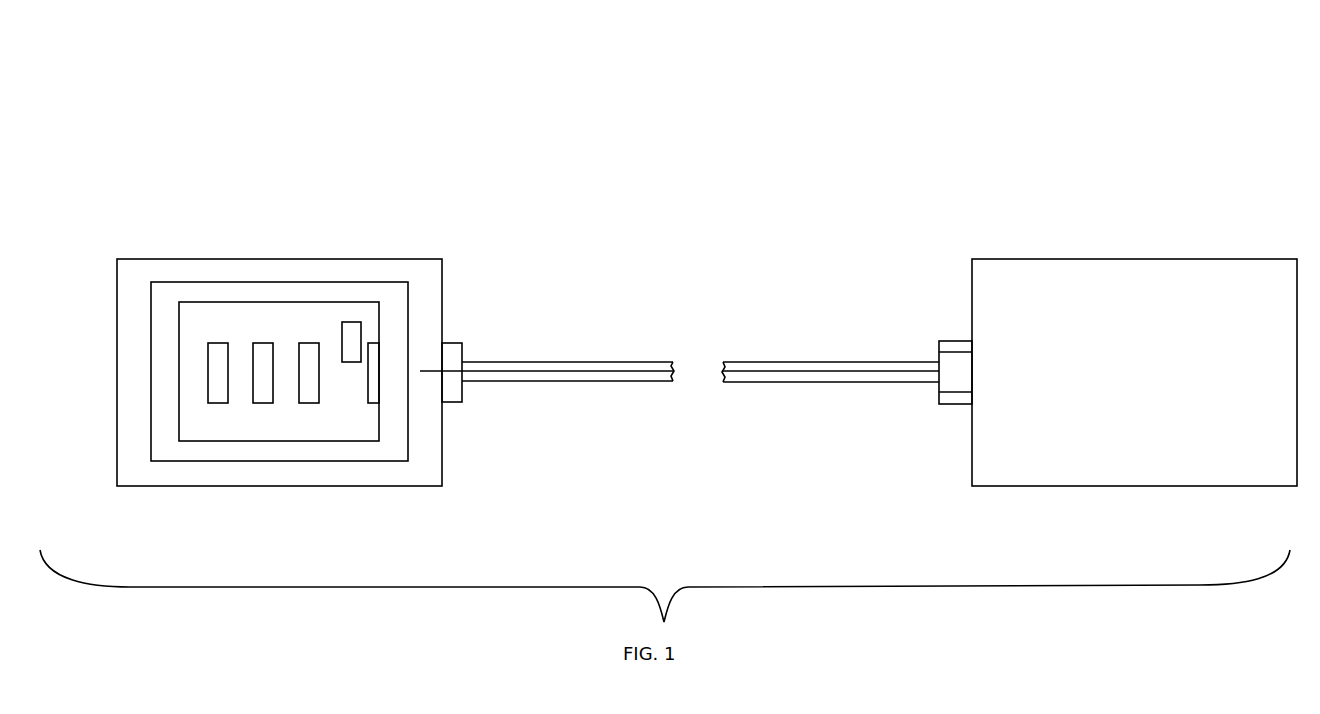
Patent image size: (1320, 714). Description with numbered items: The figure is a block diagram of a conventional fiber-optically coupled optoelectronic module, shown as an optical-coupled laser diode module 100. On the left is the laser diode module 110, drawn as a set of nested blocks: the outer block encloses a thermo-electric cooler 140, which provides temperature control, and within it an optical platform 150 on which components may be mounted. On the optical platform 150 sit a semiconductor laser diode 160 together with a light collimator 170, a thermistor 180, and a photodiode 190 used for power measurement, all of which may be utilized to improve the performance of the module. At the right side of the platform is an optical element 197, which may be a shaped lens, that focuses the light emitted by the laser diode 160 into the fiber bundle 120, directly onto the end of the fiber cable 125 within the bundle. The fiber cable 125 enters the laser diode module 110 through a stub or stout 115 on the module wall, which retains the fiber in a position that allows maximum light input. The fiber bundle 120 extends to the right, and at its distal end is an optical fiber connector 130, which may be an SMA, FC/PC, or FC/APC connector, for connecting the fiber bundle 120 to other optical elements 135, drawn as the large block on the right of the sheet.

The optical-coupled laser diode module 100 is at (1098, 83).
The laser diode module 110 is at (235, 259).
The stub or stout 115 is at (445, 403).
The fiber bundle 120 is at (618, 362).
The fiber cable 125 is at (567, 371).
The optical fiber connector 130 is at (957, 341).
The other optical elements 135 is at (1207, 259).
The thermo-electric cooler 140 is at (168, 463).
The optical platform 150 is at (235, 442).
The semiconductor laser diode 160 is at (208, 368).
The light collimator 170 is at (260, 343).
The thermistor 180 is at (318, 342).
The photodiode 190 is at (361, 330).
The optical element 197 is at (380, 360).